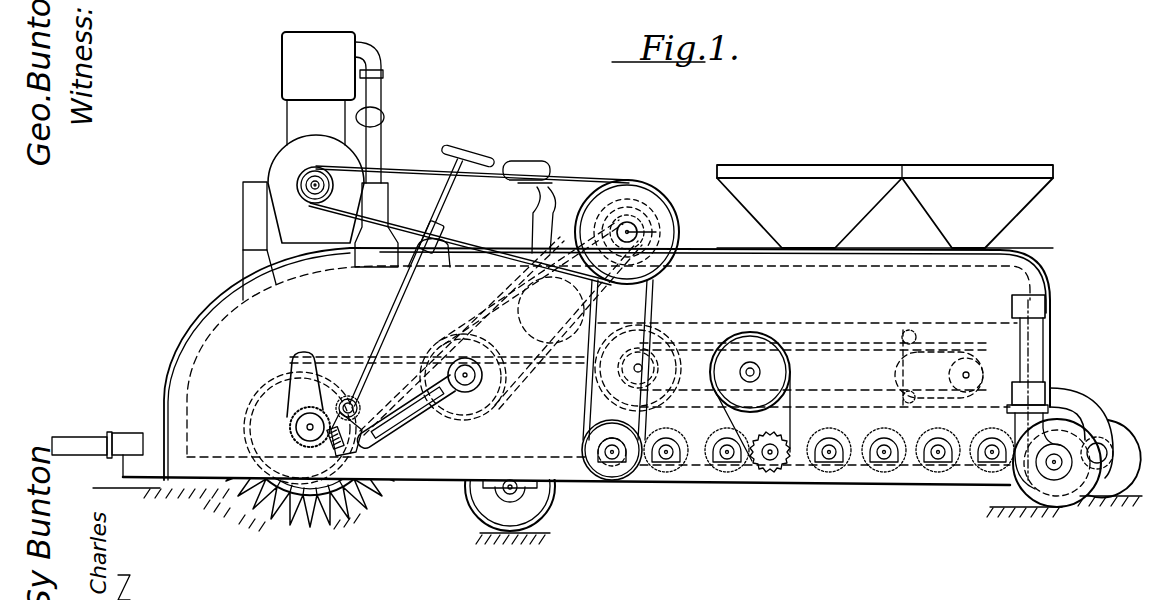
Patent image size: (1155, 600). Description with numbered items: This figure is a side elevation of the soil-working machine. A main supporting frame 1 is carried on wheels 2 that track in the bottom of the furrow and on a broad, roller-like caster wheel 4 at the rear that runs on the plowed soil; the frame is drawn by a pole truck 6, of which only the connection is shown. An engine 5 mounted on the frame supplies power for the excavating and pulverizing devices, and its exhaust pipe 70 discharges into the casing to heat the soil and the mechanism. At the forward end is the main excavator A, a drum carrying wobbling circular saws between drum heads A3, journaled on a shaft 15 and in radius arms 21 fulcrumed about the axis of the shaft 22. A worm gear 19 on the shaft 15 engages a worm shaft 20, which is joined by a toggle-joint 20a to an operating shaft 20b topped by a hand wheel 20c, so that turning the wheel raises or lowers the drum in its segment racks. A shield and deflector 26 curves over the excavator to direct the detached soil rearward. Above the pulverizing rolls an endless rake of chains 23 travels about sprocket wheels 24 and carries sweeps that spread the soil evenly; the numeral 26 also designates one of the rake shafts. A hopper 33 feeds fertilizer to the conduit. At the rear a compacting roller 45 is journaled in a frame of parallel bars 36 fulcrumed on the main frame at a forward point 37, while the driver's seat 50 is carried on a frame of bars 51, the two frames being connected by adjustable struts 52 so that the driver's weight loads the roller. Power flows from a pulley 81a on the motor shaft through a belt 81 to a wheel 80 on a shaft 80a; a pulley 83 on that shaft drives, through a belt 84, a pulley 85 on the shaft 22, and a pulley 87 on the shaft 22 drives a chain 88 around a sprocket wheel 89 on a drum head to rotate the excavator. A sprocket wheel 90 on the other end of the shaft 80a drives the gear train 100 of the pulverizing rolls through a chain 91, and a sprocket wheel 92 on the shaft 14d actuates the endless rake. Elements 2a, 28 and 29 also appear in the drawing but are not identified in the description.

The main supporting frame 1 is at (858, 485).
The wheels 2 is at (543, 508).
The wheel axle bracket 2a is at (505, 489).
The caster wheel 4 is at (1050, 497).
The engine 5 is at (346, 166).
The truck 6 is at (88, 437).
The shaft 14d is at (664, 458).
The shaft 15 is at (306, 440).
The worm gear 19 is at (290, 432).
The worm shaft 20 is at (368, 440).
The toggle-joint 20a is at (346, 400).
The operating shaft 20b is at (393, 335).
The hand wheel 20c is at (462, 153).
The radius arms 21 is at (408, 394).
The shaft 22 is at (467, 364).
The chains 23 is at (855, 347).
The sprocket wheels 24 is at (948, 373).
The shield and deflector 26 is at (195, 322).
The shaft 28 is at (644, 368).
The gear 29 is at (672, 382).
The hopper 33 is at (885, 206).
The parallel bars 36 is at (877, 388).
The forward point 37 is at (793, 407).
The compacting roller 45 is at (1115, 488).
The driver's seat 50 is at (532, 162).
The parallel bars 51 is at (545, 221).
The struts 52 is at (873, 382).
The exhaust pipe 70 is at (384, 159).
The wheel 80 is at (637, 184).
The shaft 80a is at (641, 229).
The chain or belt 81 is at (600, 179).
The pulley or sprocket wheel 81a is at (329, 185).
The pulley 83 is at (660, 233).
The belt or chain 84 is at (500, 297).
The pulley 85 is at (548, 310).
The pulley 87 is at (462, 336).
The chain 88 is at (433, 427).
The sprocket wheel 89 is at (248, 412).
The sprocket wheel 90 is at (660, 210).
The chain 91 is at (656, 302).
The sprocket wheel 92 is at (672, 434).
The gear train 100 is at (912, 492).
The main excavator A is at (275, 485).
The drum heads A3 is at (310, 486).